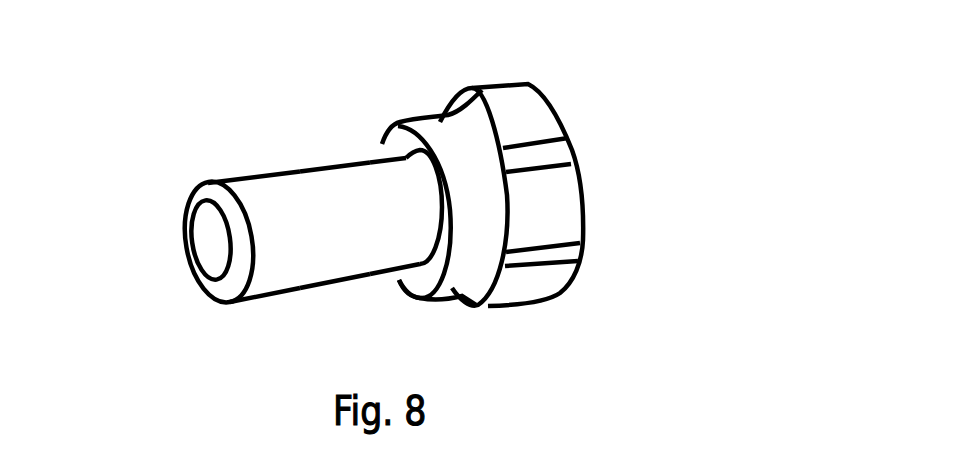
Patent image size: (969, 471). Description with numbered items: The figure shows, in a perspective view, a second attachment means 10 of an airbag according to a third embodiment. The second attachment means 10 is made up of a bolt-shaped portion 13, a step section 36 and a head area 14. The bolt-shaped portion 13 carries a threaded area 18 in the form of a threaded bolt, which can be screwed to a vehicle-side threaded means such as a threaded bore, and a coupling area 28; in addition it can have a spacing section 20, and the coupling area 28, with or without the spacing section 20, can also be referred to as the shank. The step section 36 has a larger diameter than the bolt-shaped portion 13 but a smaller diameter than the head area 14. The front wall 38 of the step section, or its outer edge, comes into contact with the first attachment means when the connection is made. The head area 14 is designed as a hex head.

The second attachment means 10 is at (82, 65).
The bolt-shaped portion 13 is at (327, 90).
The head area 14 is at (542, 106).
The threaded area 18 is at (270, 188).
The spacing section 20 is at (337, 177).
The coupling area 28 is at (382, 162).
The step section 36 is at (445, 124).
The front wall 38 is at (412, 287).